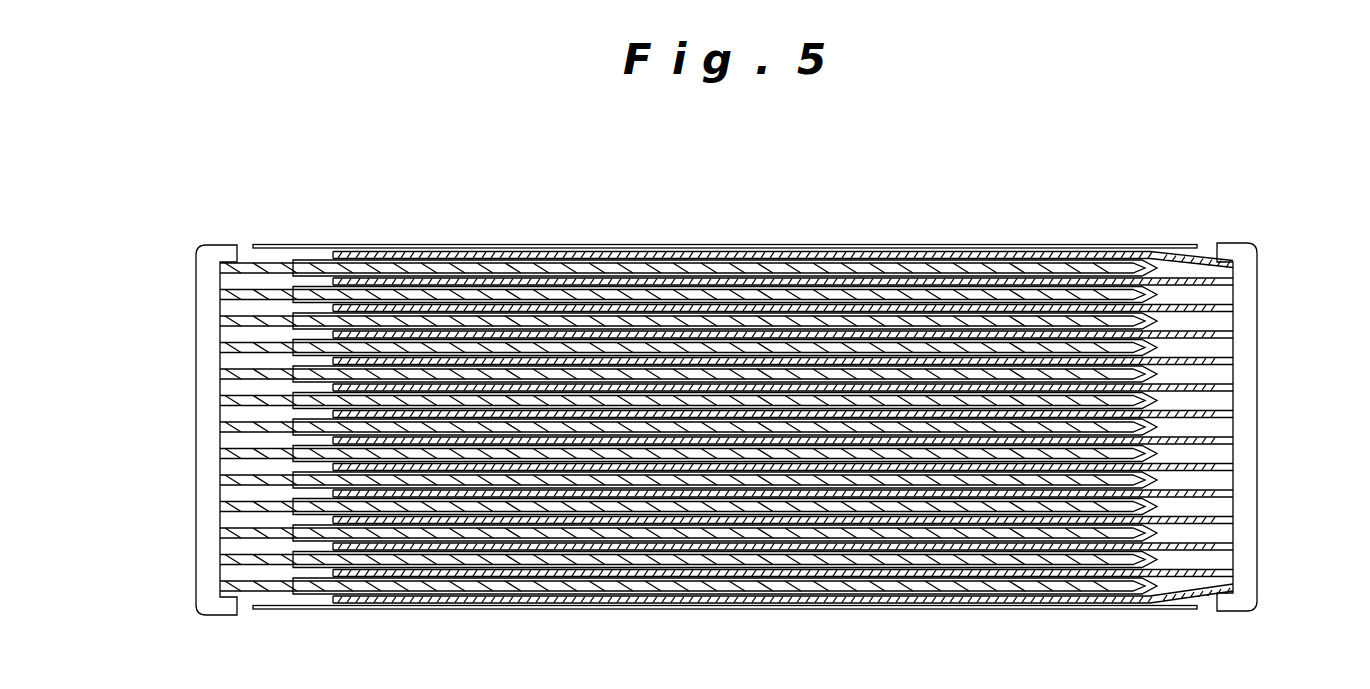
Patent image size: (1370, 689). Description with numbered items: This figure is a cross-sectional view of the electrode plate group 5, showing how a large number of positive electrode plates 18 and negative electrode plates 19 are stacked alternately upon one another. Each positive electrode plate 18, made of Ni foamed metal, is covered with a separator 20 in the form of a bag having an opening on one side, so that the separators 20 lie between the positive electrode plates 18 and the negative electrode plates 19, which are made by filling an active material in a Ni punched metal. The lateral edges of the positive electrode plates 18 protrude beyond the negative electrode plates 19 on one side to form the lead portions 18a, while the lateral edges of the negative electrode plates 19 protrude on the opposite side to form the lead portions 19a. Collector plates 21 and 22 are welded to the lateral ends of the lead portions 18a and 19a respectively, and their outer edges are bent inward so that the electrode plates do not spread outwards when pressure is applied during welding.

The electrode plate group 5 is at (298, 176).
The positive electrode plate 18 is at (633, 292).
The lead portion 18a is at (250, 350).
The negative electrode plate 19 is at (928, 285).
The lead portion 19a is at (1210, 327).
The separator 20 is at (772, 287).
The collector plate 21 is at (208, 433).
The collector plate 22 is at (1243, 505).